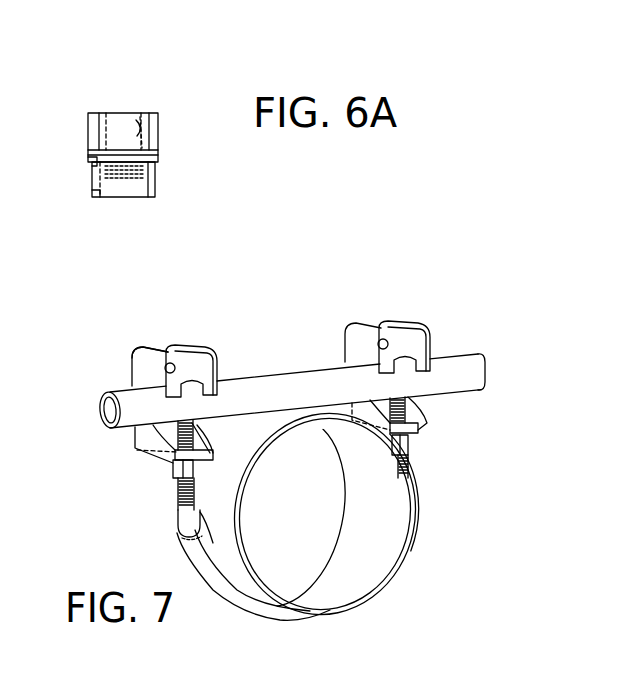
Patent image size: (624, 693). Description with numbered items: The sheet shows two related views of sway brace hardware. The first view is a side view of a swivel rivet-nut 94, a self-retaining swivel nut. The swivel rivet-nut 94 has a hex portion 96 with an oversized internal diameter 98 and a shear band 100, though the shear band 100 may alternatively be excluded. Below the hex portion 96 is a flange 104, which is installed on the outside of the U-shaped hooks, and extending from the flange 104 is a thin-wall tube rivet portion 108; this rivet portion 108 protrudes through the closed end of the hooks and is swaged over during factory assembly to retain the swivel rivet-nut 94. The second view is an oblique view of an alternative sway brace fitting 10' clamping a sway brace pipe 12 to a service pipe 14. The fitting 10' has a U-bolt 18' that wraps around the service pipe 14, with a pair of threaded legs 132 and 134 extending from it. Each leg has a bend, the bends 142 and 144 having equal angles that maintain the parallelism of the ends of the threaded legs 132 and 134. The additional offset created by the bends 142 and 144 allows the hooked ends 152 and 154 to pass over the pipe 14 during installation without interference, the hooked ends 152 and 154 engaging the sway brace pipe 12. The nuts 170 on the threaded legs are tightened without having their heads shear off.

In FIG. 6A, the swivel rivet-nut 94 is at (115, 93).
In FIG. 6A, the hex portion 96 is at (170, 126).
In FIG. 6A, the oversized internal diameter 98 is at (140, 115).
In FIG. 6A, the shear band 100 is at (171, 152).
In FIG. 6A, the flange 104 is at (80, 169).
In FIG. 6A, the thin-wall tube rivet portion 108 is at (168, 184).
In FIG. 7, the sway brace fitting 10' is at (191, 333).
In FIG. 7, the sway brace pipe 12 is at (468, 370).
In FIG. 7, the service pipe 14 is at (393, 508).
In FIG. 7, the U-bolt 18' is at (258, 527).
In FIG. 7, the threaded leg 132 is at (163, 489).
In FIG. 7, the threaded leg 134 is at (422, 465).
In FIG. 7, the bend 142 is at (187, 520).
In FIG. 7, the bend 144 is at (197, 537).
In FIG. 7, the hooked end 152 is at (114, 354).
In FIG. 7, the hooked end 154 is at (428, 309).
In FIG. 7, the nut 170 is at (173, 468).